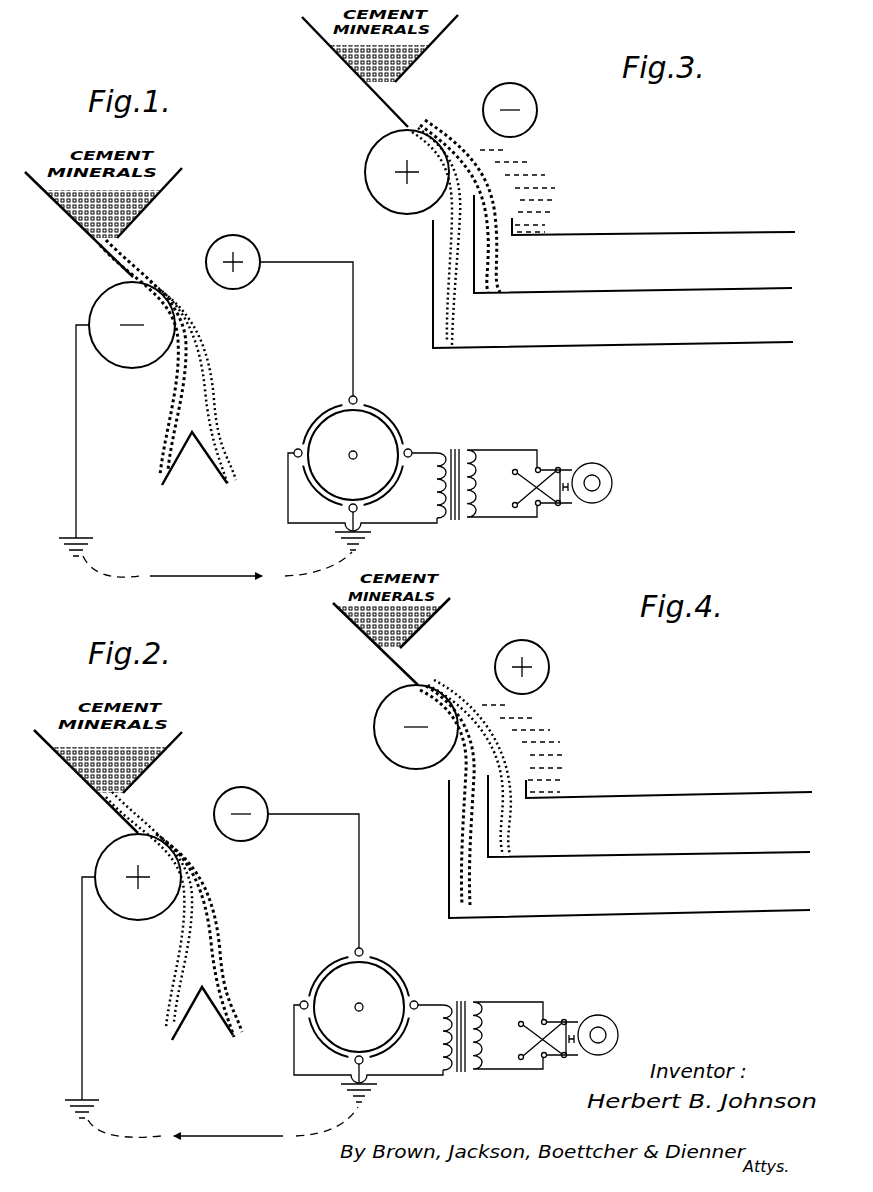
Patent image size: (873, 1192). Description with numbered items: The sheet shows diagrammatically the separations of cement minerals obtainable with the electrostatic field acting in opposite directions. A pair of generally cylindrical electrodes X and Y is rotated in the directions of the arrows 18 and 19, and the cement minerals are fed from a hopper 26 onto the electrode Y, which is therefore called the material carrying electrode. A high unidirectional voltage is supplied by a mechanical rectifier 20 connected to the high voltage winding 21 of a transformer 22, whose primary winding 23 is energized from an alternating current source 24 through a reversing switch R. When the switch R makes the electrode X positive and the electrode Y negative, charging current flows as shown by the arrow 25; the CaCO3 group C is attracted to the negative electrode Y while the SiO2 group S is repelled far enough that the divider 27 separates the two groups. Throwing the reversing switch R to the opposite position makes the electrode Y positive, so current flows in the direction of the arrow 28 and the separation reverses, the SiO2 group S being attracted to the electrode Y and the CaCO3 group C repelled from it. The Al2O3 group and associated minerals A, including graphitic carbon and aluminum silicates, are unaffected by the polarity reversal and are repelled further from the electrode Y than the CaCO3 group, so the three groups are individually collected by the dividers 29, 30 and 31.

In FIG. 1, the arrow 18 is at (208, 240).
In FIG. 2, the arrow 18 is at (237, 794).
In FIG. 3, the arrow 18 is at (478, 80).
In FIG. 4, the arrow 18 is at (490, 655).
In FIG. 1, the arrow 19 is at (96, 283).
In FIG. 2, the arrow 19 is at (124, 866).
In FIG. 3, the arrow 19 is at (378, 127).
In FIG. 4, the arrow 19 is at (368, 702).
In FIG. 1, the mechanical rectifier 20 is at (403, 417).
In FIG. 2, the mechanical rectifier 20 is at (373, 1020).
In FIG. 1, the high voltage winding 21 is at (436, 483).
In FIG. 2, the high voltage winding 21 is at (373, 1044).
In FIG. 1, the transformer 22 is at (455, 447).
In FIG. 2, the transformer 22 is at (471, 1019).
In FIG. 1, the primary winding 23 is at (502, 483).
In FIG. 2, the primary winding 23 is at (508, 1035).
In FIG. 1, the alternating current source 24 is at (608, 471).
In FIG. 2, the alternating current source 24 is at (612, 1023).
In FIG. 1, the arrow 25 is at (223, 580).
In FIG. 3, the arrow 25 is at (441, 60).
In FIG. 4, the arrow 25 is at (441, 630).
In FIG. 1, the hopper 26 is at (171, 199).
In FIG. 2, the hopper 26 is at (122, 777).
In FIG. 1, the divider 27 is at (212, 468).
In FIG. 2, the divider 27 is at (202, 1021).
In FIG. 2, the arrow 28 is at (223, 1135).
In FIG. 3, the divider 29 is at (512, 238).
In FIG. 4, the divider 29 is at (527, 799).
In FIG. 3, the divider 30 is at (474, 295).
In FIG. 4, the divider 30 is at (488, 858).
In FIG. 3, the divider 31 is at (432, 346).
In FIG. 4, the divider 31 is at (448, 900).
In FIG. 1, the electrode X is at (258, 245).
In FIG. 2, the electrode X is at (311, 854).
In FIG. 3, the electrode X is at (527, 98).
In FIG. 4, the electrode X is at (548, 658).
In FIG. 1, the electrode Y is at (89, 318).
In FIG. 2, the electrode Y is at (67, 981).
In FIG. 3, the electrode Y is at (370, 196).
In FIG. 4, the electrode Y is at (376, 713).
In FIG. 1, the CaCO3 group C is at (170, 410).
In FIG. 2, the CaCO3 group C is at (210, 935).
In FIG. 3, the CaCO3 group C is at (485, 213).
In FIG. 4, the CaCO3 group C is at (458, 808).
In FIG. 1, the SiO2 group S is at (210, 388).
In FIG. 2, the SiO2 group S is at (149, 909).
In FIG. 3, the SiO2 group S is at (445, 235).
In FIG. 4, the SiO2 group S is at (505, 782).
In FIG. 3, the Al2O3 group A is at (515, 186).
In FIG. 4, the Al2O3 group A is at (517, 743).
In FIG. 1, the reversing switch R is at (549, 461).
In FIG. 2, the reversing switch R is at (550, 1014).